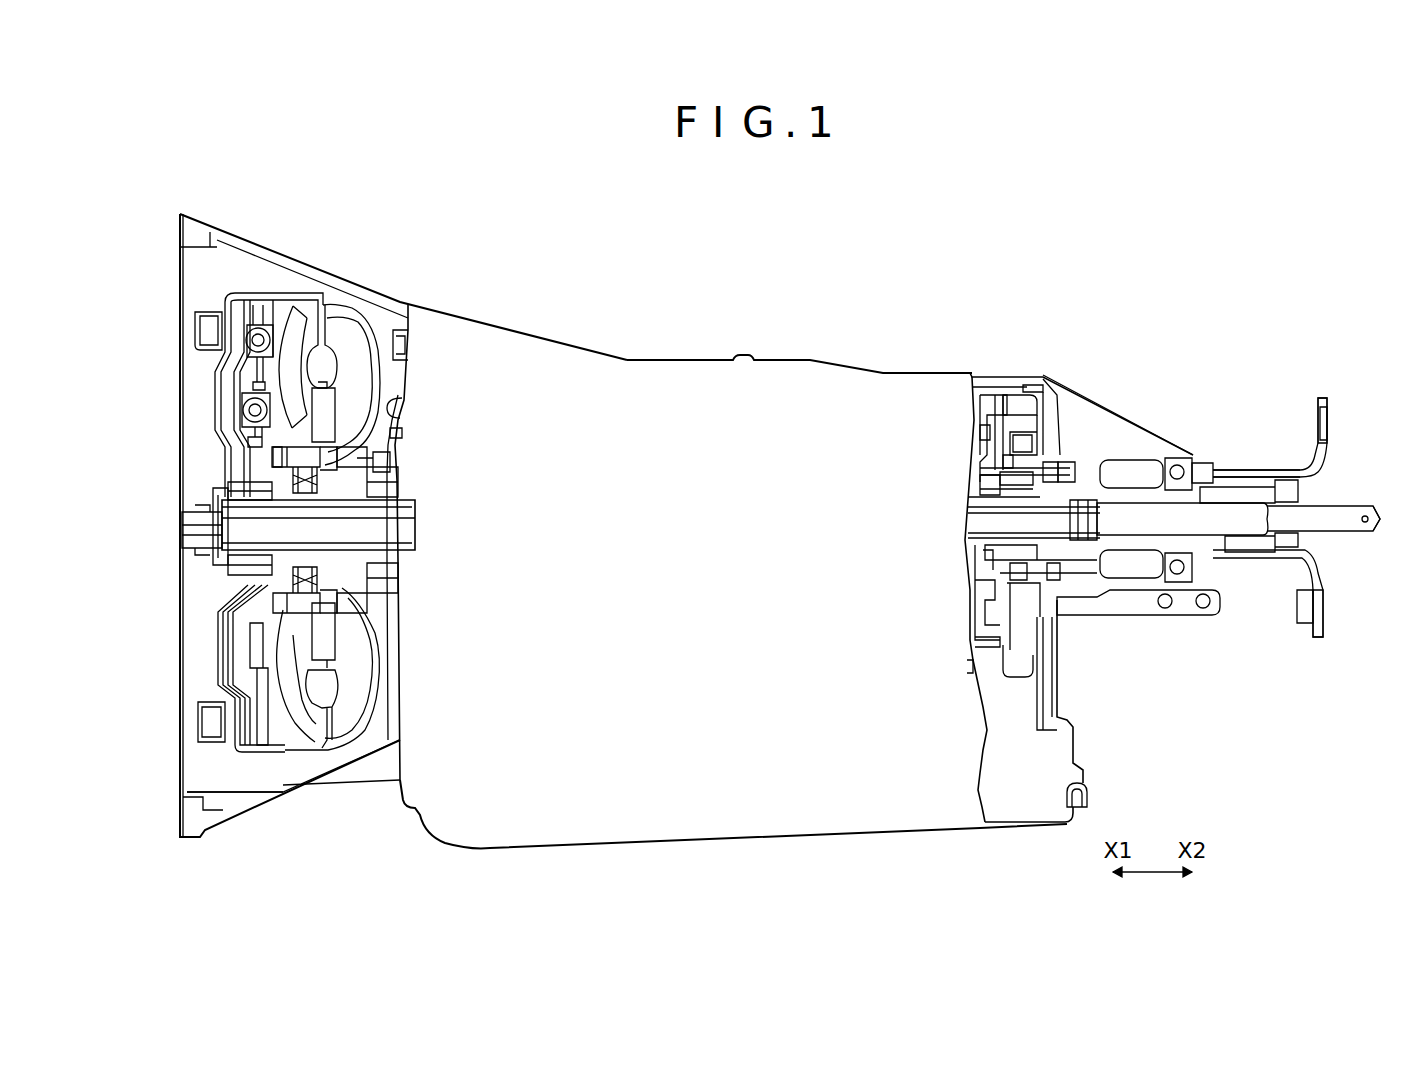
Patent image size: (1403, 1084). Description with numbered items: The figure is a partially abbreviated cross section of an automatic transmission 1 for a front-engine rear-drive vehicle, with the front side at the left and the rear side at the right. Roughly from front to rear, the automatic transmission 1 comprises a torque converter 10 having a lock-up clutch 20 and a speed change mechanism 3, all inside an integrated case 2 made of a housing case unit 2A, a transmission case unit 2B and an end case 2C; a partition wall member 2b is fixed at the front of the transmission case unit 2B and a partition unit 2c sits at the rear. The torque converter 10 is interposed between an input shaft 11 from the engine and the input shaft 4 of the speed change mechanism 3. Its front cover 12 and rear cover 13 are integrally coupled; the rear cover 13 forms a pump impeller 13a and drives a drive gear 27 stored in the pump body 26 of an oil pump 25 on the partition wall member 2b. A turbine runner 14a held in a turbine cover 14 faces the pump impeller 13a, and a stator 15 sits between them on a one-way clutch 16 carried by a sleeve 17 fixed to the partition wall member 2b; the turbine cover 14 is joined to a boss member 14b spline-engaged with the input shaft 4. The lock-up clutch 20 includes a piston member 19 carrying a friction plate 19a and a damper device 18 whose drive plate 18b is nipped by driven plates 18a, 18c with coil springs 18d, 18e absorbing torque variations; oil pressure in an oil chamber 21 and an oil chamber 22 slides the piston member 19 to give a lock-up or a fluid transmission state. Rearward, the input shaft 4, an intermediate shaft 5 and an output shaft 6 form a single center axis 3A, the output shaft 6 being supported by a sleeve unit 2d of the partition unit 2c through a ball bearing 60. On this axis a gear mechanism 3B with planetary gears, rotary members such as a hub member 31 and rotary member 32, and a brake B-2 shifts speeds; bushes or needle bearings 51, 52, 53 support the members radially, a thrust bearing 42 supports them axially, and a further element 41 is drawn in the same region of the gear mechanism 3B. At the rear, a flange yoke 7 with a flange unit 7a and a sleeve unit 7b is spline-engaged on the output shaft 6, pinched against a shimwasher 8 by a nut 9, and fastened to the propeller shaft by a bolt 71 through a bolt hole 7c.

The automatic transmission 1 is at (790, 312).
The case 2 is at (499, 327).
The housing case unit 2A is at (221, 227).
The transmission case unit 2B is at (633, 362).
The end case 2C is at (1091, 396).
The partition wall member 2b is at (405, 352).
The partition unit 2c is at (1053, 420).
The sleeve unit 2d is at (1062, 460).
The speed change mechanism 3 is at (983, 377).
The center axis 3A is at (1378, 522).
The gear mechanism 3B is at (1012, 376).
The brake B-2 is at (1031, 398).
The input shaft 4 is at (413, 537).
The intermediate shaft 5 is at (970, 545).
The output shaft 6 is at (1242, 540).
The flange yoke 7 is at (1317, 568).
The flange unit 7a is at (1320, 395).
The sleeve unit 7b is at (1247, 473).
The bolt hole 7c is at (1318, 427).
The shimwasher 8 is at (1190, 485).
The nut 9 is at (1307, 543).
The torque converter 10 is at (325, 292).
The input shaft 11 is at (180, 533).
The front cover 12 is at (220, 423).
The rear cover 13 is at (353, 333).
The pump impeller 13a is at (360, 340).
The turbine cover 14 is at (287, 313).
The turbine runner 14a is at (300, 313).
The boss member 14b is at (227, 577).
The stator 15 is at (330, 417).
The one-way clutch 16 is at (310, 508).
The sleeve 17 is at (418, 500).
The damper device 18 is at (245, 385).
The driven plate 18a is at (217, 603).
The drive plate 18b is at (233, 640).
The driven plate 18c is at (217, 687).
The coil spring 18d is at (257, 450).
The coil spring 18e is at (247, 342).
The piston member 19 is at (249, 383).
The friction plate 19a is at (225, 305).
The lock-up clutch 20 is at (233, 300).
The oil chamber 21 is at (233, 482).
The oil chamber 22 is at (213, 517).
The oil pump 25 is at (407, 405).
The pump body 26 is at (403, 437).
The drive gear 27 is at (407, 473).
The hub member 31 is at (980, 398).
The rotary member 32 is at (987, 432).
The planetary gear 41 is at (992, 465).
The thrust bearing 42 is at (980, 483).
The bush or needle bearing 51 is at (1023, 493).
The bush or needle bearing 52 is at (977, 520).
The bush or needle bearing 53 is at (1073, 460).
The ball bearing 60 is at (1175, 460).
The bolt 71 is at (1297, 613).